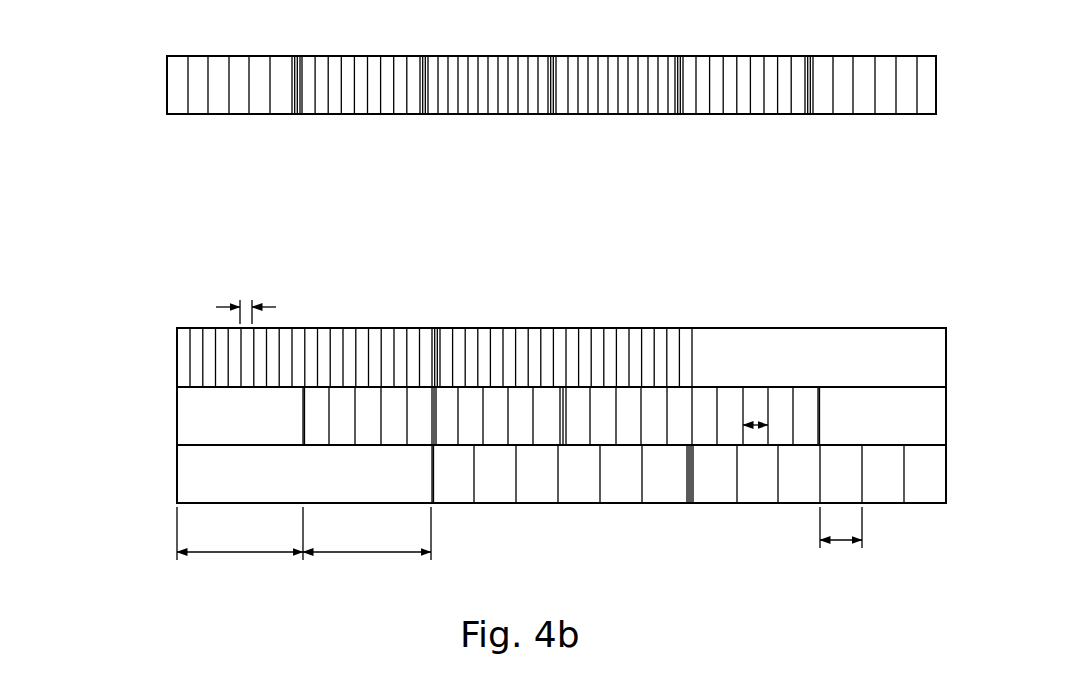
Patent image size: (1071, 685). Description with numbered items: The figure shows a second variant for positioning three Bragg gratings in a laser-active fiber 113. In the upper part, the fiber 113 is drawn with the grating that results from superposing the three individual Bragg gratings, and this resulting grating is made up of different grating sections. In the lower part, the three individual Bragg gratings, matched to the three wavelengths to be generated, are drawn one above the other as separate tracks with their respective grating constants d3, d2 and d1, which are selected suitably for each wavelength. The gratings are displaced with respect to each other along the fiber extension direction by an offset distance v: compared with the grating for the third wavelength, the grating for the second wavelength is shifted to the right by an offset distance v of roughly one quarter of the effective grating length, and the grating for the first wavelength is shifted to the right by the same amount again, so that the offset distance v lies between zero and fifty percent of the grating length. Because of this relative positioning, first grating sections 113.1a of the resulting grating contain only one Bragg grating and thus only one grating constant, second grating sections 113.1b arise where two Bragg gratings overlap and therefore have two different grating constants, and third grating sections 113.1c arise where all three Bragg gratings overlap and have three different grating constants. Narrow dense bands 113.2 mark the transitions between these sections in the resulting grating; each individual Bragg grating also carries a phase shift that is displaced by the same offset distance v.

The laser-active fiber 113 is at (471, 42).
The first grating sections 113.1a is at (221, 119).
The second grating sections 113.1b is at (378, 119).
The third grating sections 113.1c is at (496, 119).
The dense marker region between sections 113.2 is at (298, 119).
The grating constant of the first Bragg grating d1 is at (841, 543).
The grating constant of the second Bragg grating d2 is at (757, 428).
The grating constant of the third Bragg grating d3 is at (246, 300).
The offset distance v is at (304, 533).